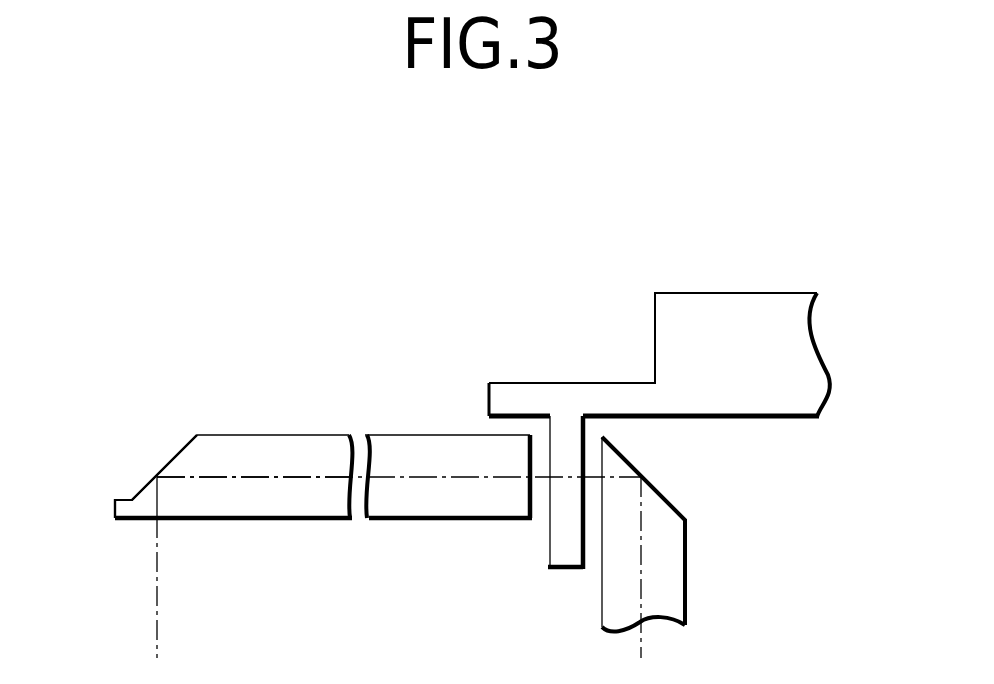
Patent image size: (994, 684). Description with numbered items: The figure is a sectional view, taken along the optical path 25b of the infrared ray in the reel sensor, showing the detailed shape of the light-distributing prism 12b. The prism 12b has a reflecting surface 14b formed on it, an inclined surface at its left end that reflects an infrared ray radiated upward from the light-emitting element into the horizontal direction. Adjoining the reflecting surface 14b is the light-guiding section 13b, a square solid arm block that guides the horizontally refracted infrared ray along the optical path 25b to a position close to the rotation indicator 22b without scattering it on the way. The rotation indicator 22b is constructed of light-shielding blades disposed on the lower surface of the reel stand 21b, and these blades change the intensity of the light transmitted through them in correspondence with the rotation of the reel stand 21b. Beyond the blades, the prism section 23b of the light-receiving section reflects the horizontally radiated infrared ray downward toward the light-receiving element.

The light-distributing prism 12b is at (425, 435).
The light-guiding section 13b is at (237, 505).
The reflecting surface 14b is at (172, 457).
The reel stand 21b is at (715, 292).
The rotation indicator 22b is at (560, 569).
The prism section 23b is at (687, 580).
The optical path 25b is at (300, 477).